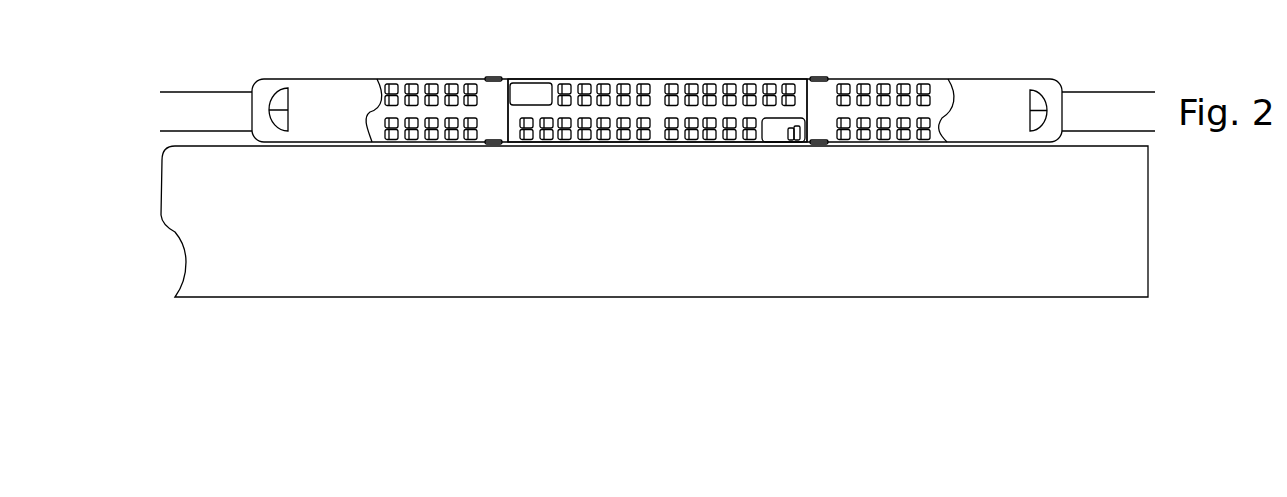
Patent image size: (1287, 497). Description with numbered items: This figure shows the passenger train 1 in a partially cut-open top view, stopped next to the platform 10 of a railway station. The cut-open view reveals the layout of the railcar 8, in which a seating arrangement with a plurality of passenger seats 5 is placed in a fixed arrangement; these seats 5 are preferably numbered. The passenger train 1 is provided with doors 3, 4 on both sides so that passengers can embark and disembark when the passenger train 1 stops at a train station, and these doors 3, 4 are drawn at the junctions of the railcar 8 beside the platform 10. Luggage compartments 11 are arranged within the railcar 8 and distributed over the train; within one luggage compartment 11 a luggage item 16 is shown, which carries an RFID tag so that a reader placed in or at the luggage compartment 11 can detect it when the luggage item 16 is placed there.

The passenger train 1 is at (657, 117).
The door 3 is at (816, 146).
The door 4 is at (491, 144).
The passenger seats 5 is at (604, 84).
The railcar 8 is at (652, 80).
The platform 10 is at (1148, 213).
The luggage compartment 11 is at (541, 86).
The luggage item 16 is at (797, 145).